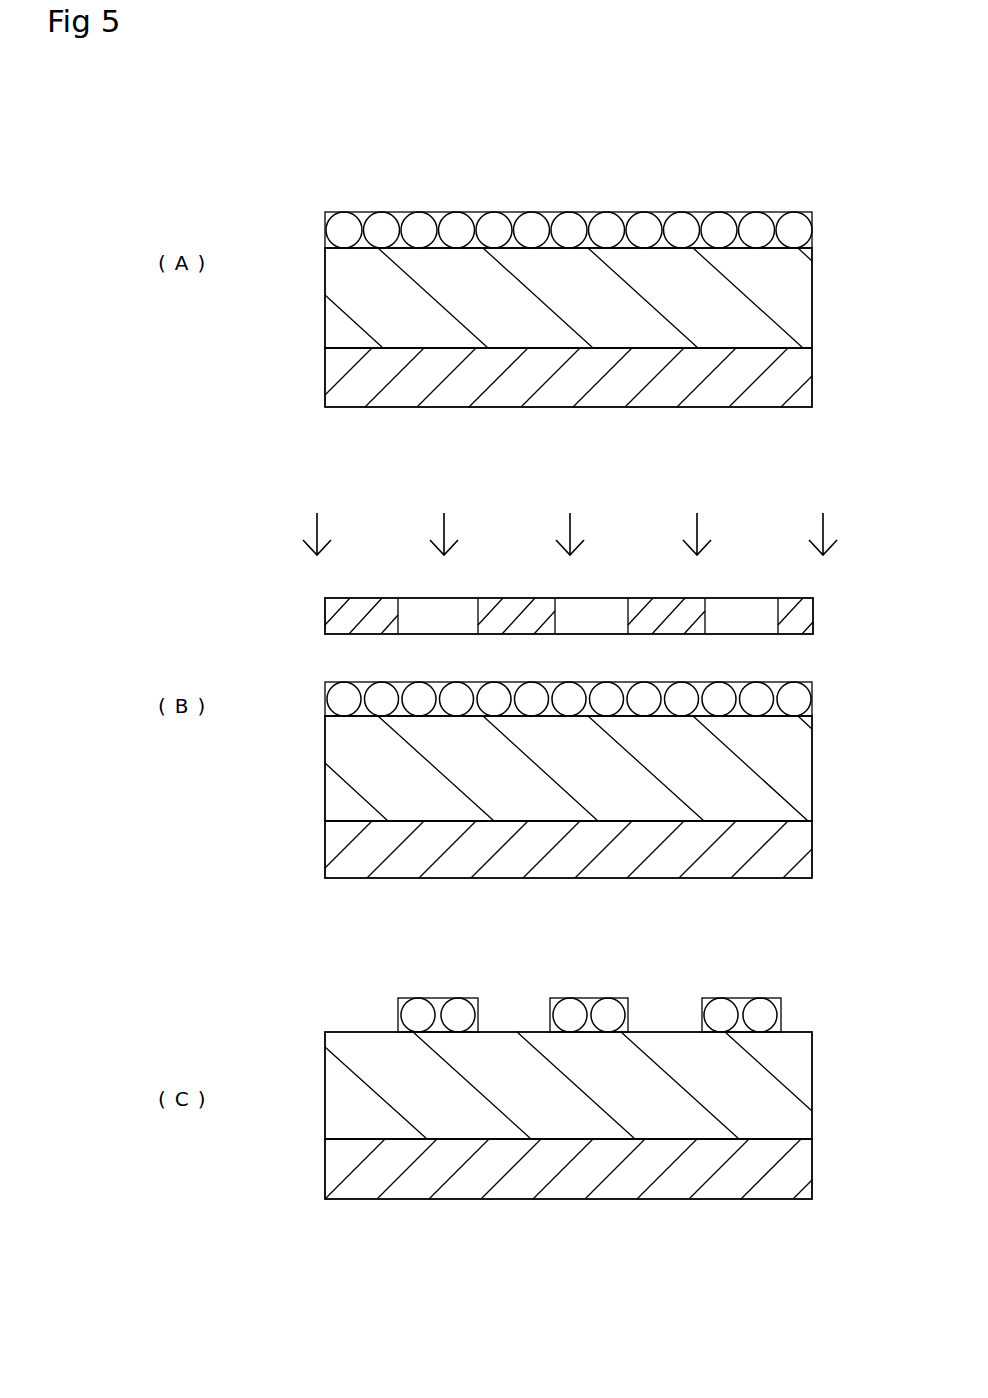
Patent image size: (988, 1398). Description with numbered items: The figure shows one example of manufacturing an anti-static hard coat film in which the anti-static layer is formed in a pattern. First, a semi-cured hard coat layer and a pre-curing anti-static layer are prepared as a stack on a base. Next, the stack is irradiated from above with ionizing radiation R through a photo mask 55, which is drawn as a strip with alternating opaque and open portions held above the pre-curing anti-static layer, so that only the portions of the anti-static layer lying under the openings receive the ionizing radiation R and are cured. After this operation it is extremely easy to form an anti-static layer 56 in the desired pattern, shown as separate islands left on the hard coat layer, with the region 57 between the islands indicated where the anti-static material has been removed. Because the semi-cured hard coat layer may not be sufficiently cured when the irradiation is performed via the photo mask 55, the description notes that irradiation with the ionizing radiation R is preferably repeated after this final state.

The photo mask 55 is at (814, 618).
The anti-static layer 56 is at (760, 1015).
The removed region 57 is at (672, 1008).
The ionizing radiation R is at (825, 523).